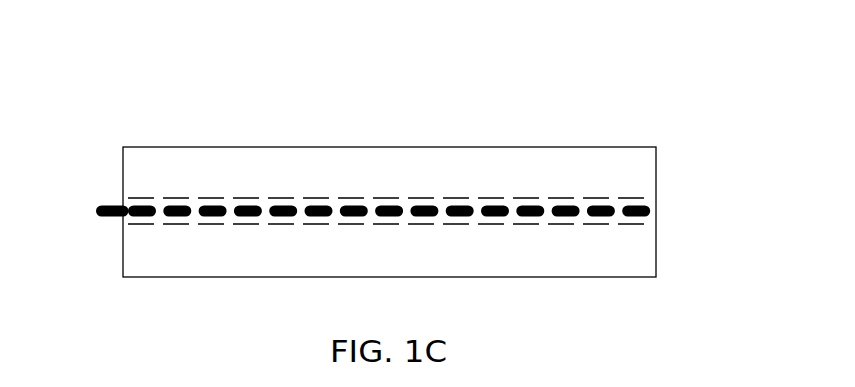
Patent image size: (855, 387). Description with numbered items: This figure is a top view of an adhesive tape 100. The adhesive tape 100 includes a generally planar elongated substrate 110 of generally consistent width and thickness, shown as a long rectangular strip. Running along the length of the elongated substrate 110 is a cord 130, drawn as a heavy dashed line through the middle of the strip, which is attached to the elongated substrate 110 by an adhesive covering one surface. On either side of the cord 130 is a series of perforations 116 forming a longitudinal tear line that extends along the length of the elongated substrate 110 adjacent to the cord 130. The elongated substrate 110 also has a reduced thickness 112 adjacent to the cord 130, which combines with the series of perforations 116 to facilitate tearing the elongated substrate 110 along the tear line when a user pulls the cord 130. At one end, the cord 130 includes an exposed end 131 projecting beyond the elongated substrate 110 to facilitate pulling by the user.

The adhesive tape 100 is at (110, 90).
The elongated substrate 110 is at (300, 158).
The reduced thickness 112 is at (248, 202).
The series of perforations 116 is at (535, 207).
The cord 130 is at (672, 211).
The exposed end 131 is at (102, 206).